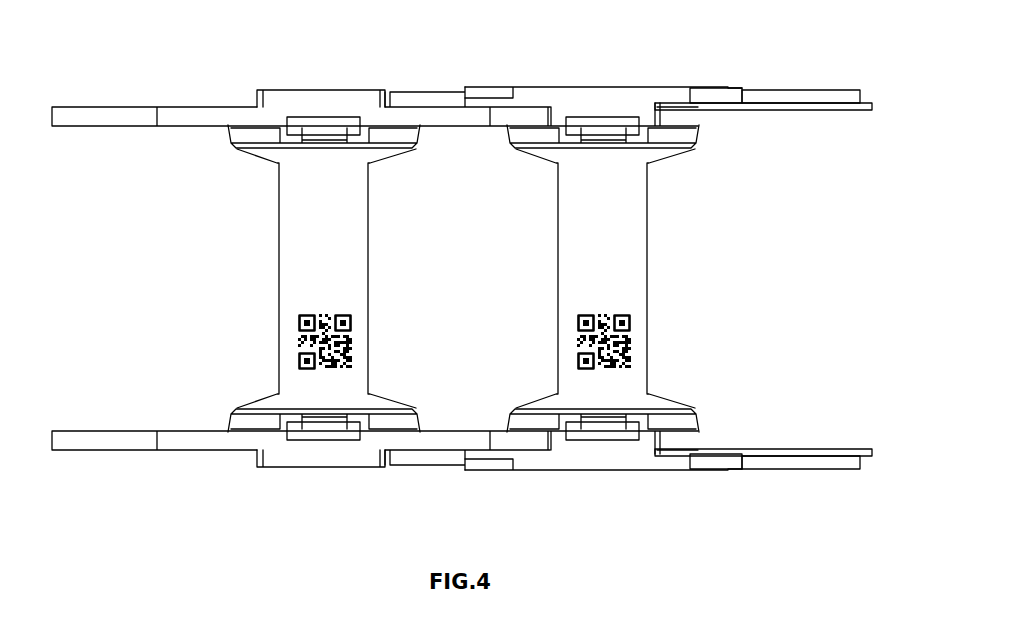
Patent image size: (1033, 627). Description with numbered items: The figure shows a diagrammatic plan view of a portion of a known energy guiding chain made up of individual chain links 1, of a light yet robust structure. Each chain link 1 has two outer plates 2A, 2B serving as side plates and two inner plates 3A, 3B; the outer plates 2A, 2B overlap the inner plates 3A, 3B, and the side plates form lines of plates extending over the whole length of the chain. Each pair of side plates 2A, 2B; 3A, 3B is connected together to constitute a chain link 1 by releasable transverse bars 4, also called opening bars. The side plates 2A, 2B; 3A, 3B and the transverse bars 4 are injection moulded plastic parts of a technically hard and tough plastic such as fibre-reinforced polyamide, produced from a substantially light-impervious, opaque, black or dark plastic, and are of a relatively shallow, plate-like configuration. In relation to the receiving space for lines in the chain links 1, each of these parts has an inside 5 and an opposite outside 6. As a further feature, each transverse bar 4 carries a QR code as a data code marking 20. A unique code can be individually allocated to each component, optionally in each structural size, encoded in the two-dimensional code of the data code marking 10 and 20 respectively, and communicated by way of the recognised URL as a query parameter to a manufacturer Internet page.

The chain link 1 is at (148, 70).
The inner plate 3B is at (311, 103).
The inner plate 3A is at (288, 458).
The outer plate 2B is at (597, 103).
The outer plate 2A is at (672, 462).
The outside 6 is at (728, 84).
The data code marking 10 is at (803, 88).
The inside 5 is at (793, 112).
The transverse bar 4 is at (355, 232).
The data code marking 20 is at (310, 303).